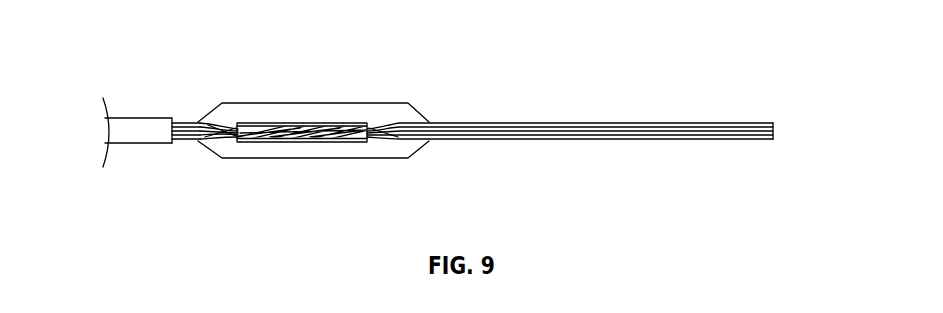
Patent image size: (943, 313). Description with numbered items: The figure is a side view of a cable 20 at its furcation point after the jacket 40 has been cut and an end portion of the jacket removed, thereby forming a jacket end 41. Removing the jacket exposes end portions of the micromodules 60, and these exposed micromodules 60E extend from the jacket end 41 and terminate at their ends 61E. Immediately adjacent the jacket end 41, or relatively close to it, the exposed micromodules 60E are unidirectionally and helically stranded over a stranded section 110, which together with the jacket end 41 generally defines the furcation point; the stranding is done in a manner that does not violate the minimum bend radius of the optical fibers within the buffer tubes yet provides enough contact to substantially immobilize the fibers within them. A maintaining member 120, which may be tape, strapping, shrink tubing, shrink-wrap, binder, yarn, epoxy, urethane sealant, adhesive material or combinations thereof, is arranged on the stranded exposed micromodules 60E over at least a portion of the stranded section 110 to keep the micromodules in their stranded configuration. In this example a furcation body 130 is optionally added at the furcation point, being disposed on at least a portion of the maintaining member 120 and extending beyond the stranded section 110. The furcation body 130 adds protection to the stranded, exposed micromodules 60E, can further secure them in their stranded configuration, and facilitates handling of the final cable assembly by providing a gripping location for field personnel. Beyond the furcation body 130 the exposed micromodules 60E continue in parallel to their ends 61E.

The cable 20 is at (122, 112).
The jacket 40 is at (163, 127).
The jacket end 41 is at (173, 146).
The micromodules 60 is at (185, 121).
The stranded section 110 is at (313, 95).
The maintaining member 120 is at (297, 123).
The furcation body 130 is at (273, 102).
The exposed micromodules 60E is at (673, 123).
The ends 61E is at (791, 124).